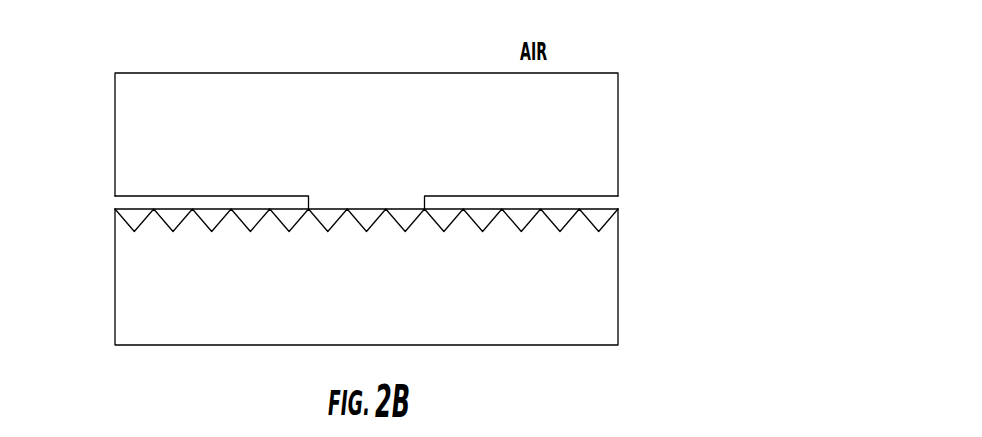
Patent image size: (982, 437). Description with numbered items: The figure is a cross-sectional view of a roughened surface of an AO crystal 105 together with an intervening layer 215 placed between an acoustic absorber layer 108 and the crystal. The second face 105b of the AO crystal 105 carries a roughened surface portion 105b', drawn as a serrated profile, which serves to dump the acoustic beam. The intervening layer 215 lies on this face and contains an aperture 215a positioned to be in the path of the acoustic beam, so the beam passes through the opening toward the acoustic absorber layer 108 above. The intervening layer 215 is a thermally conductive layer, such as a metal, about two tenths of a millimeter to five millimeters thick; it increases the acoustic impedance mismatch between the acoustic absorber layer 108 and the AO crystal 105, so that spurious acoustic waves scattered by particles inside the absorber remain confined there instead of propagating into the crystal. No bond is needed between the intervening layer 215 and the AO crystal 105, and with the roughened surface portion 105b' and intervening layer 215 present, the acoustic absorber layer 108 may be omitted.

The AO crystal 105 is at (382, 322).
The second face 105b is at (319, 231).
The roughened surface portion 105b' is at (435, 255).
The acoustic absorber layer 108 is at (608, 107).
The intervening layer 215 is at (613, 201).
The aperture 215a is at (374, 190).